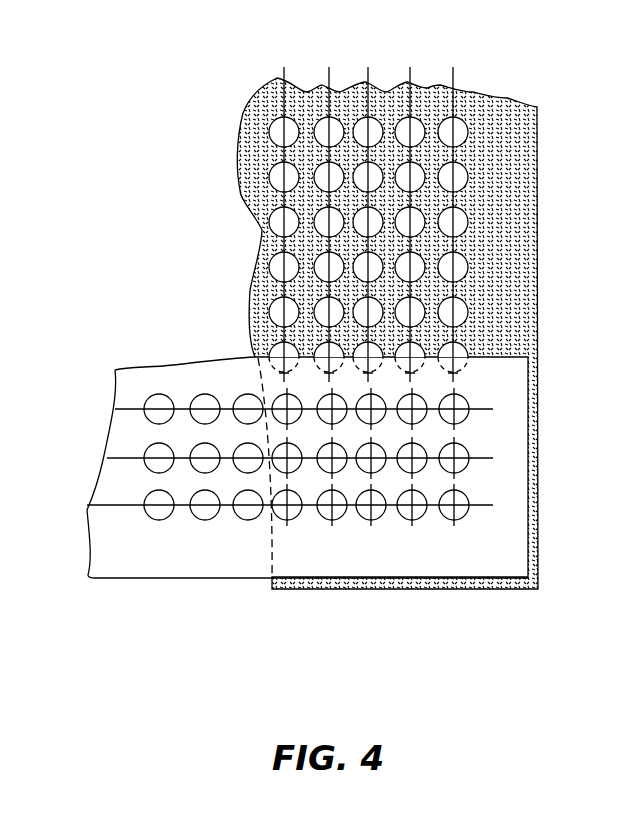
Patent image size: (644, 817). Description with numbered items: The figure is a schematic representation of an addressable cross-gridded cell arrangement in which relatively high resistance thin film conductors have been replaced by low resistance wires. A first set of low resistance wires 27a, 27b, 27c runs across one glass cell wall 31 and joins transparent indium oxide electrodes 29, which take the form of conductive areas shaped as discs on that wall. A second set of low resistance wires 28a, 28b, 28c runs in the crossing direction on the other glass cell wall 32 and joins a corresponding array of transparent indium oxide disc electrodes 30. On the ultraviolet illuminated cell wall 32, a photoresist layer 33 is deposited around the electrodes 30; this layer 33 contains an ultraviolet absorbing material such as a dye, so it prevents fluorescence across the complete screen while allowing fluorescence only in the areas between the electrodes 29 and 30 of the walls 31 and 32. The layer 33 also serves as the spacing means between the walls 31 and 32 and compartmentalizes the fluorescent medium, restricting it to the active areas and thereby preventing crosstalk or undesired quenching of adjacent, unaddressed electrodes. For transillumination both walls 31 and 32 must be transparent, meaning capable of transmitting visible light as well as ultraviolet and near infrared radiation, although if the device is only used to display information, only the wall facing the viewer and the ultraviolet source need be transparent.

The low resistance wire 27a is at (100, 503).
The low resistance wire 27b is at (125, 459).
The low resistance wire 27c is at (125, 409).
The low resistance wire 28a is at (453, 76).
The low resistance wire 28b is at (409, 83).
The low resistance wire 28c is at (367, 83).
The transparent indium oxide electrodes 29 is at (198, 452).
The transparent indium oxide electrodes 30 is at (265, 262).
The glass cell wall 31 is at (88, 560).
The glass cell wall 32 is at (537, 132).
The photoresist layer 33 is at (516, 196).